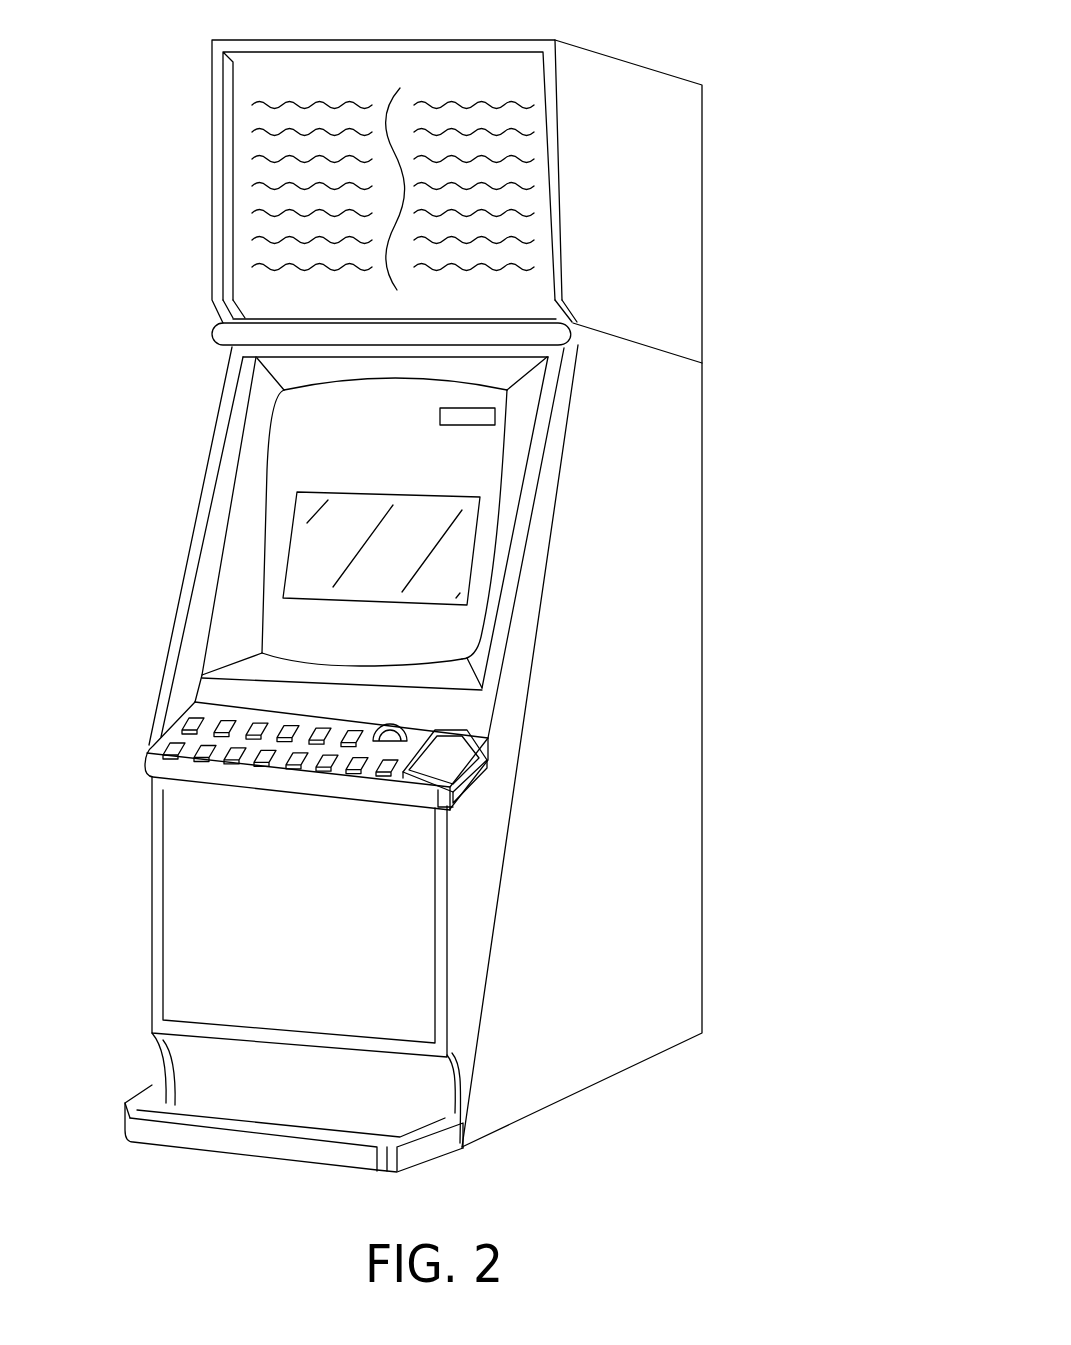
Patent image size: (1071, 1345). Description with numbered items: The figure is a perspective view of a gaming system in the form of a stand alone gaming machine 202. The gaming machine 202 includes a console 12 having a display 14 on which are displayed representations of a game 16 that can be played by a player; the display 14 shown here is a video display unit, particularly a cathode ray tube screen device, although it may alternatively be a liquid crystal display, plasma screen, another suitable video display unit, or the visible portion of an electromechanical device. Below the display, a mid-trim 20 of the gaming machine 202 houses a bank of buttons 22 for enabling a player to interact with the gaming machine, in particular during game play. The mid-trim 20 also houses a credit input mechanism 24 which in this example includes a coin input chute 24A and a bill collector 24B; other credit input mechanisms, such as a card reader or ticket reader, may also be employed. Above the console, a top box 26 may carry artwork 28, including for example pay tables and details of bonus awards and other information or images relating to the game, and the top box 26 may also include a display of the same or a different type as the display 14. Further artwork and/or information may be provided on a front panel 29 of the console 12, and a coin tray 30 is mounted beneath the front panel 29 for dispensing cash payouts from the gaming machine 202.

The stand alone gaming machine 202 is at (678, 54).
The console 12 is at (668, 560).
The display 14 is at (262, 615).
The game 16 is at (295, 553).
The mid-trim 20 is at (145, 762).
The bank of buttons 22 is at (226, 765).
The credit input mechanism 24 is at (434, 708).
The coin input chute 24A is at (405, 727).
The bill collector 24B is at (425, 768).
The top box 26 is at (234, 214).
The artwork 28 is at (262, 110).
The front panel 29 is at (190, 962).
The coin tray 30 is at (133, 1127).